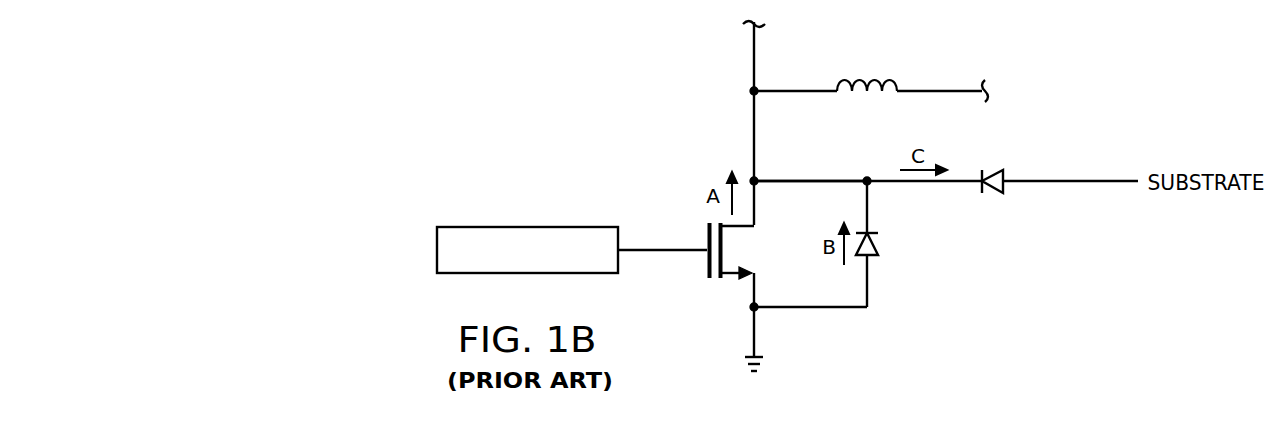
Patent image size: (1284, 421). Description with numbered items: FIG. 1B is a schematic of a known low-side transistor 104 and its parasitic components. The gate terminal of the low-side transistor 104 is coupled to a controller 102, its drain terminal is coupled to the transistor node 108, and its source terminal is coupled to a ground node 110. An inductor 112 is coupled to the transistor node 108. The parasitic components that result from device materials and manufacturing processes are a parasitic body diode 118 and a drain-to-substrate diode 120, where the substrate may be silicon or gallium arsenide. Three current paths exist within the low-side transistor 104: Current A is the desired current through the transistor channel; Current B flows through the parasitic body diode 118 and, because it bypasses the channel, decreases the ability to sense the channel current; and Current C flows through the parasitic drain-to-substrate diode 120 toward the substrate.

The controller 102 is at (529, 225).
The low-side transistor 104 is at (706, 260).
The transistor node 108 is at (758, 178).
The ground node 110 is at (768, 362).
The inductor 112 is at (867, 78).
The parasitic body diode 118 is at (878, 241).
The drain-to-substrate diode 120 is at (990, 173).